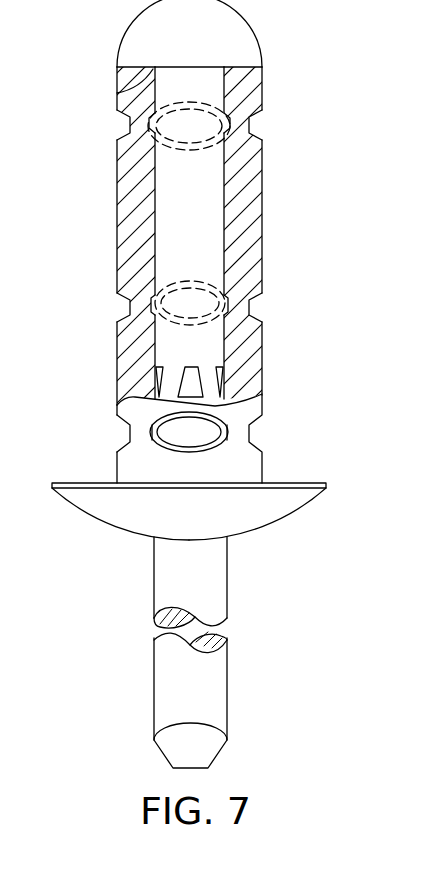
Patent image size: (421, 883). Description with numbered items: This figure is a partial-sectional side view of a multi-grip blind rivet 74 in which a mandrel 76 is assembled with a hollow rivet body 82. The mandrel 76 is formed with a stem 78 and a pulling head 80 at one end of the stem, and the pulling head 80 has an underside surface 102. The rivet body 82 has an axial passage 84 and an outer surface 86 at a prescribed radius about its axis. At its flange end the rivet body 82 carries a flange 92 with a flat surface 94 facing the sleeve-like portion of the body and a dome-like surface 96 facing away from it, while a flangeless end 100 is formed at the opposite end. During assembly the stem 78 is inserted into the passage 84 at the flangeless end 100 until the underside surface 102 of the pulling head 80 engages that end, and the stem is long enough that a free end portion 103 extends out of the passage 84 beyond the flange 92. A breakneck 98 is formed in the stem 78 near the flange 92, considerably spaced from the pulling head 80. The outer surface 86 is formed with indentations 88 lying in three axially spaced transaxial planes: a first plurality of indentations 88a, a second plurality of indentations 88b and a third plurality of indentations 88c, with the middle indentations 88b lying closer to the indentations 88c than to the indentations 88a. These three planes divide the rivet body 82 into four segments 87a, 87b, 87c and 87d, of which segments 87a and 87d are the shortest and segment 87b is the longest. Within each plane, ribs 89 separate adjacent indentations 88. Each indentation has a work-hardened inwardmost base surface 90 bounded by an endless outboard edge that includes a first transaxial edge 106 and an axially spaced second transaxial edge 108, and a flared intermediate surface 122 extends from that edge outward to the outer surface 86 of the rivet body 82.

The multi-grip blind rivet 74 is at (100, 28).
The mandrel 76 is at (240, 580).
The stem 78 is at (222, 697).
The pulling head 80 is at (247, 35).
The rivet body 82 is at (270, 69).
The axial passage 84 is at (214, 177).
The outer surface 86 is at (120, 450).
The first segment 87a is at (258, 99).
The second segment 87b is at (258, 233).
The third segment 87c is at (125, 335).
The fourth segment 87d is at (120, 468).
The indentations 88 is at (97, 316).
The first plurality of indentations 88a is at (275, 123).
The second plurality of indentations 88b is at (275, 298).
The third plurality of indentations 88c is at (102, 428).
The ribs 89 is at (243, 432).
The base surface 90 is at (120, 300).
The flange 92 is at (78, 523).
The flat surface 94 is at (308, 482).
The dome-like surface 96 is at (298, 515).
The breakneck 98 is at (214, 384).
The flangeless end 100 is at (228, 66).
The underside surface 102 is at (120, 90).
The free end portion 103 is at (153, 707).
The first transaxial edge 106 is at (200, 414).
The second transaxial edge 108 is at (176, 448).
The intermediate surface 122 is at (193, 465).